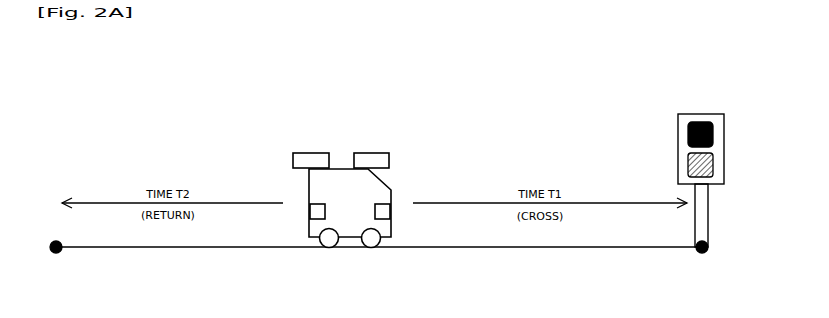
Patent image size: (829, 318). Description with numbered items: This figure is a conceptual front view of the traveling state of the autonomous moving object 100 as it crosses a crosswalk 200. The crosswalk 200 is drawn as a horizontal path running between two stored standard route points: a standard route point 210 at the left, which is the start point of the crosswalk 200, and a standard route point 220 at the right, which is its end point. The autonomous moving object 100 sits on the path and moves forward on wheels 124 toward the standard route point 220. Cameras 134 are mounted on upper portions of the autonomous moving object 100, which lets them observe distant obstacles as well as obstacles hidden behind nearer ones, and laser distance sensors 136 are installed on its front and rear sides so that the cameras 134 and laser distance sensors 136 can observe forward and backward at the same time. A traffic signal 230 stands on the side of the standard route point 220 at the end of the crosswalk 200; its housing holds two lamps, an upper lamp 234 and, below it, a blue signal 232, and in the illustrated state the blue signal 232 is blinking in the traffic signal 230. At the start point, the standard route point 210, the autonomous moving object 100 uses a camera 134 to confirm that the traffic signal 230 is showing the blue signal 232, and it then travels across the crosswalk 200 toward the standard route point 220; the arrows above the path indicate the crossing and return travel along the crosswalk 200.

The autonomous moving object 100 is at (325, 192).
The wheels 124 is at (370, 248).
The cameras 134 is at (372, 153).
The laser distance sensors 136 is at (310, 212).
The crosswalk 200 is at (244, 249).
The standard route point 210 is at (58, 252).
The standard route point 220 is at (700, 252).
The traffic signal 230 is at (700, 113).
The blue signal 232 is at (690, 167).
The red light 234 is at (689, 132).